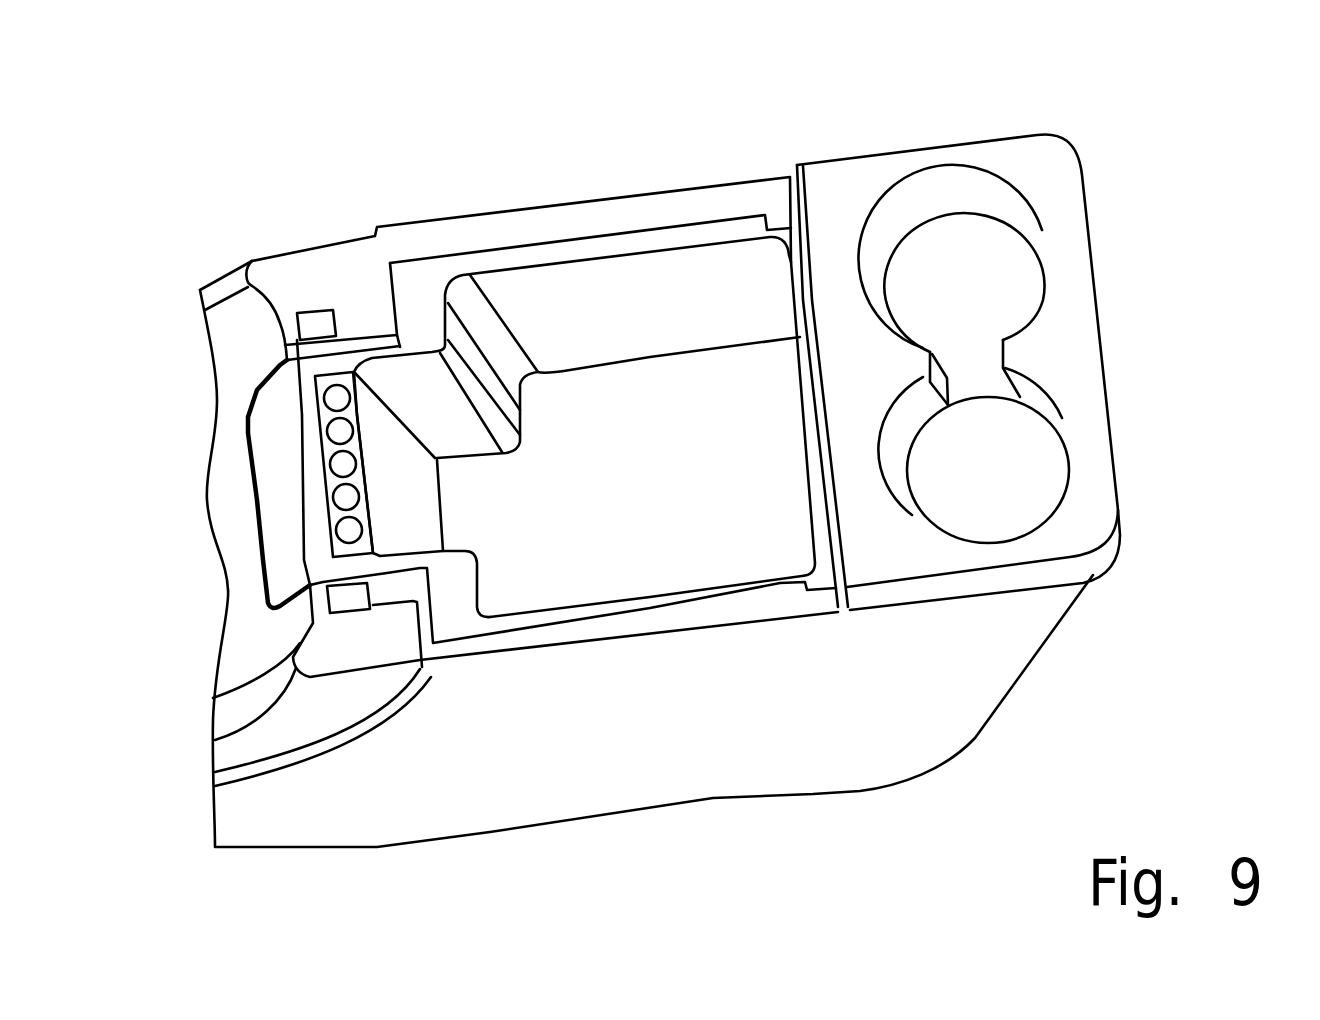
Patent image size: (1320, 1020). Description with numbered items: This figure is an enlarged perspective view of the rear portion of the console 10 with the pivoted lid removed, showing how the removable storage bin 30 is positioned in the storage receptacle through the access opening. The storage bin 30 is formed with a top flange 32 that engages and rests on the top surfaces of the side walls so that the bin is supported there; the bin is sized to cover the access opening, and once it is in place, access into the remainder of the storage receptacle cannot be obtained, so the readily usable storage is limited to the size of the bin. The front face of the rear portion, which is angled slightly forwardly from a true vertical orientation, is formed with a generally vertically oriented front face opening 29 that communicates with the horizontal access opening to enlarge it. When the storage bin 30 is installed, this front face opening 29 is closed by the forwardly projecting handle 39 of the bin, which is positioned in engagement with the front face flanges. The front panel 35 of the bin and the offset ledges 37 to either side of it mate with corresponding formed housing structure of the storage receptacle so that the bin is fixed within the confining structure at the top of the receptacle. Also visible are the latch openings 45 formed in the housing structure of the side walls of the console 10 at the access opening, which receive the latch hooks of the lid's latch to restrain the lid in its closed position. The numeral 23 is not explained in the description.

The console 10 is at (256, 126).
The cup holder 23 is at (1048, 323).
The front face opening 29 is at (268, 612).
The removable storage bin 30 is at (529, 295).
The top flange 32 is at (615, 213).
The front panel 35 is at (413, 518).
The offset ledges 37 is at (445, 432).
The handle 39 is at (263, 450).
The latch openings 45 is at (334, 320).